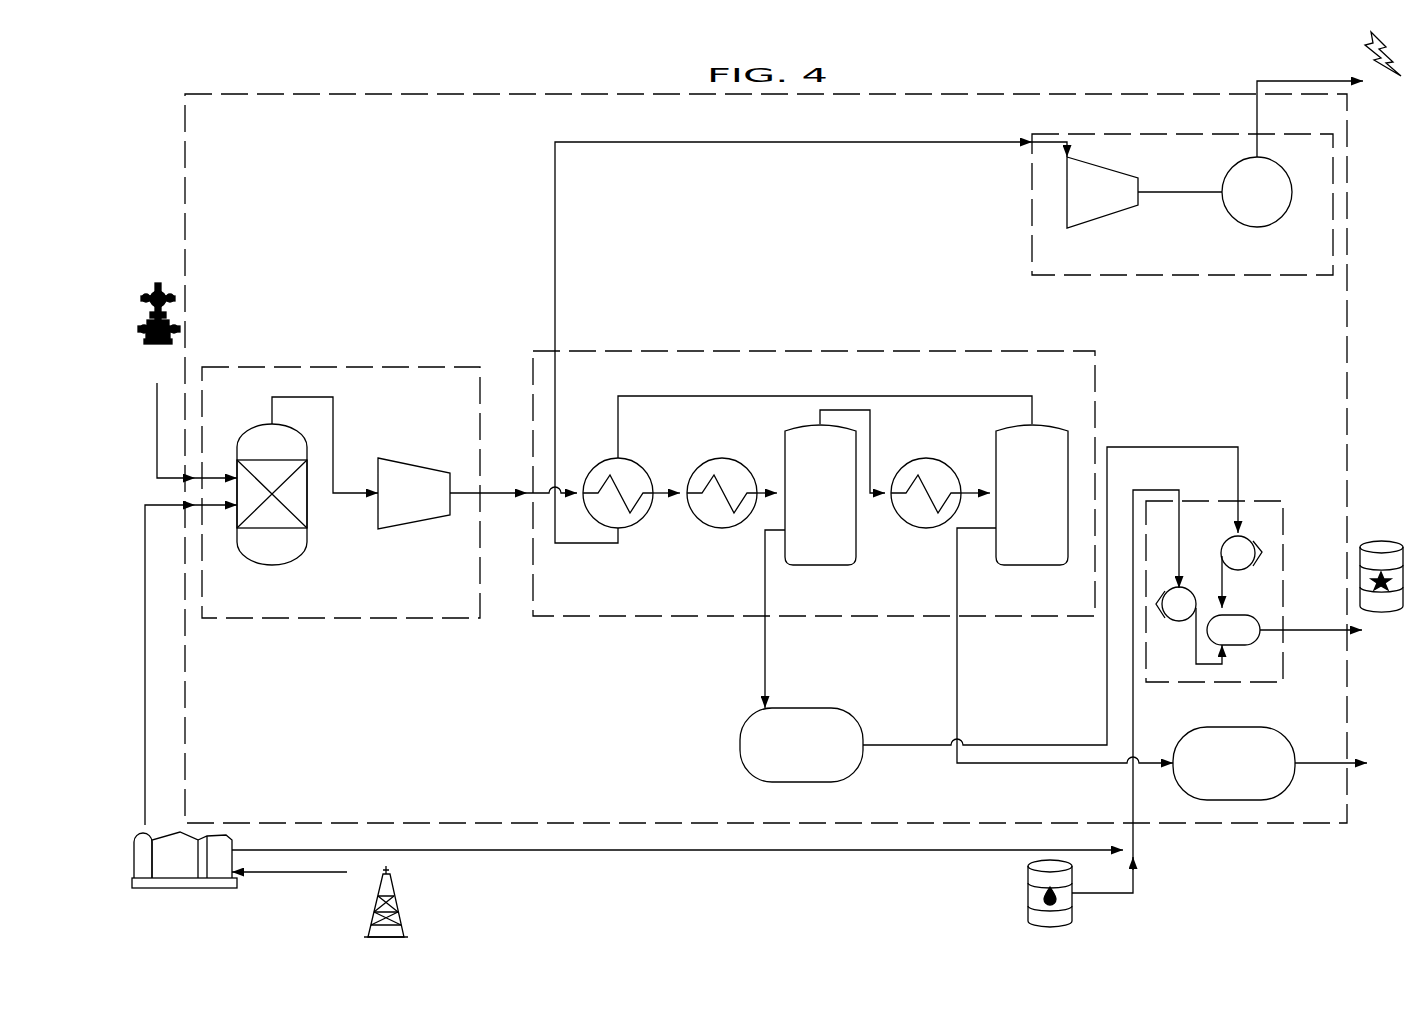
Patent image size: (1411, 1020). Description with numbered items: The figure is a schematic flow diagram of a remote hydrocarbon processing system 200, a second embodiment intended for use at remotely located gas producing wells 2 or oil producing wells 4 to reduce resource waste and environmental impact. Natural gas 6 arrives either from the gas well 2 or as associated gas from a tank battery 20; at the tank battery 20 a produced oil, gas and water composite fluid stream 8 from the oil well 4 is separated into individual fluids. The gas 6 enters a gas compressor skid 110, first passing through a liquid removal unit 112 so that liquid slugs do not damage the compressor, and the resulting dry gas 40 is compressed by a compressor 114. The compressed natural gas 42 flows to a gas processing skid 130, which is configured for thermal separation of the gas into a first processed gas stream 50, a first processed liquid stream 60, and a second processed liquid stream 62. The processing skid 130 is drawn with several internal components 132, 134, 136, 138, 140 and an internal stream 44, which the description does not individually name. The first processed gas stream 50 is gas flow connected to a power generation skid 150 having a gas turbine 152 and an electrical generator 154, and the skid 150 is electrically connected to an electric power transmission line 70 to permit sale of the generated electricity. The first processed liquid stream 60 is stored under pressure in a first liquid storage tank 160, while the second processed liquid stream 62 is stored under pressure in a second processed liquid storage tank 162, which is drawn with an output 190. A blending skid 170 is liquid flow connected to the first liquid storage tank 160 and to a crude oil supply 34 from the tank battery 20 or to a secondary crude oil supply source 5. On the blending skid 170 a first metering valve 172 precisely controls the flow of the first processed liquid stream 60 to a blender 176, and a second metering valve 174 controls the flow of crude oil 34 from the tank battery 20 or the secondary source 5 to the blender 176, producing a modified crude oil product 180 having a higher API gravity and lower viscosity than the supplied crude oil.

The remote hydrocarbon processing system 200 is at (238, 94).
The gas producing well 2 is at (159, 332).
The natural gas 6 is at (176, 478).
The gas compressor skid 110 is at (341, 479).
The liquid removal unit 112 is at (307, 545).
The dry gas 40 is at (333, 412).
The compressor 114 is at (410, 523).
The compressed natural gas 42 is at (504, 493).
The gas processing skid 130 is at (814, 469).
The first processed gas stream 50 is at (569, 140).
The first heat exchanger 132 is at (645, 528).
The second heat exchanger 134 is at (725, 528).
The first separator vessel 136 is at (785, 555).
The vapor stream 44 is at (870, 428).
The third heat exchanger 138 is at (905, 528).
The second separator vessel 140 is at (996, 555).
The first processed liquid stream 60 is at (765, 688).
The second processed liquid stream 62 is at (957, 698).
The first liquid storage tank 160 is at (801, 745).
The second processed liquid storage tank 162 is at (1234, 763).
The power generation skid 150 is at (1205, 112).
The gas turbine 152 is at (1105, 220).
The electrical generator 154 is at (1270, 222).
The electric power transmission line 70 is at (1329, 94).
The blending skid 170 is at (1244, 684).
The first metering valve 172 is at (1241, 572).
The second metering valve 174 is at (1147, 691).
The blender 176 is at (1236, 641).
The modified crude oil product 180 is at (1331, 592).
The revenue from liquid product 190 is at (1349, 780).
The tank battery 20 is at (165, 895).
The produced oil/gas/water composite fluid stream 8 is at (292, 878).
The oil producing well 4 is at (376, 902).
The crude oil supply 34 is at (702, 858).
The secondary crude oil supply source 5 is at (1050, 907).